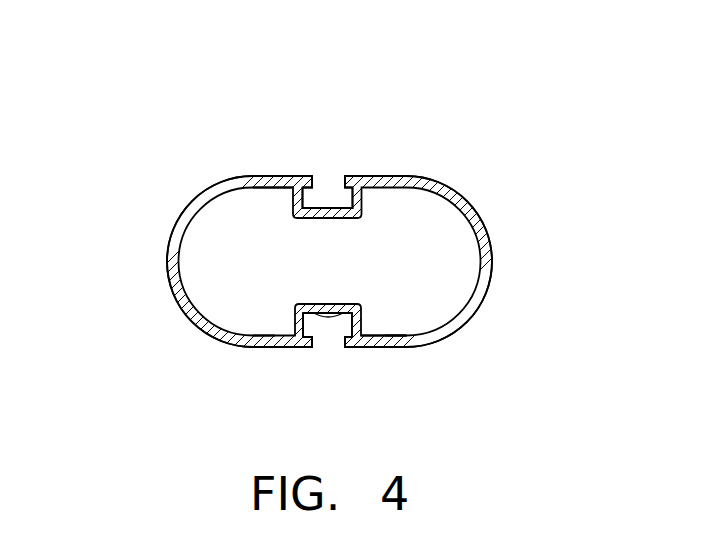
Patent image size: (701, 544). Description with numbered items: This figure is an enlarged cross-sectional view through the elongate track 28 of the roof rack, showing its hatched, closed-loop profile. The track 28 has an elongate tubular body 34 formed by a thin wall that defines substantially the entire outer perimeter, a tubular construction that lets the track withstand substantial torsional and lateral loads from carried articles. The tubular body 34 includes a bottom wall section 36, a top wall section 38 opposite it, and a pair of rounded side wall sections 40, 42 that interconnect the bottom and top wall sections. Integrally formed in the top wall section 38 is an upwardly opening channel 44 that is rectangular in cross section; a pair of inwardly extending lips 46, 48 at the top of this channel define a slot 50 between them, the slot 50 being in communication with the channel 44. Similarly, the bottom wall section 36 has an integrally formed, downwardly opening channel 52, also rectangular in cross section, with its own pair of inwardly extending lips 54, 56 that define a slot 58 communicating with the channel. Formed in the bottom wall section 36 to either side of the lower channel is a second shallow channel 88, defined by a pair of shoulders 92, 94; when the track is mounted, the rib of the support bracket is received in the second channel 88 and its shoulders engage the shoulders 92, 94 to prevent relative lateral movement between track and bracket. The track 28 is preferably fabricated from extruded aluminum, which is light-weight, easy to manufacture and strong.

The track 28 is at (476, 184).
The tubular body 34 is at (175, 228).
The bottom wall section 36 is at (375, 346).
The top wall section 38 is at (268, 177).
The side wall section 40 is at (174, 295).
The side wall section 42 is at (490, 253).
The upwardly opening channel 44 is at (322, 208).
The lip 46 is at (317, 176).
The lip 48 is at (357, 176).
The slot 50 is at (347, 176).
The downwardly opening channel 52 is at (347, 305).
The lip 54 is at (307, 347).
The lip 56 is at (353, 347).
The slot 58 is at (313, 343).
The second shallow channel 88 is at (279, 347).
The shoulder 92 is at (265, 349).
The shoulder 94 is at (402, 348).